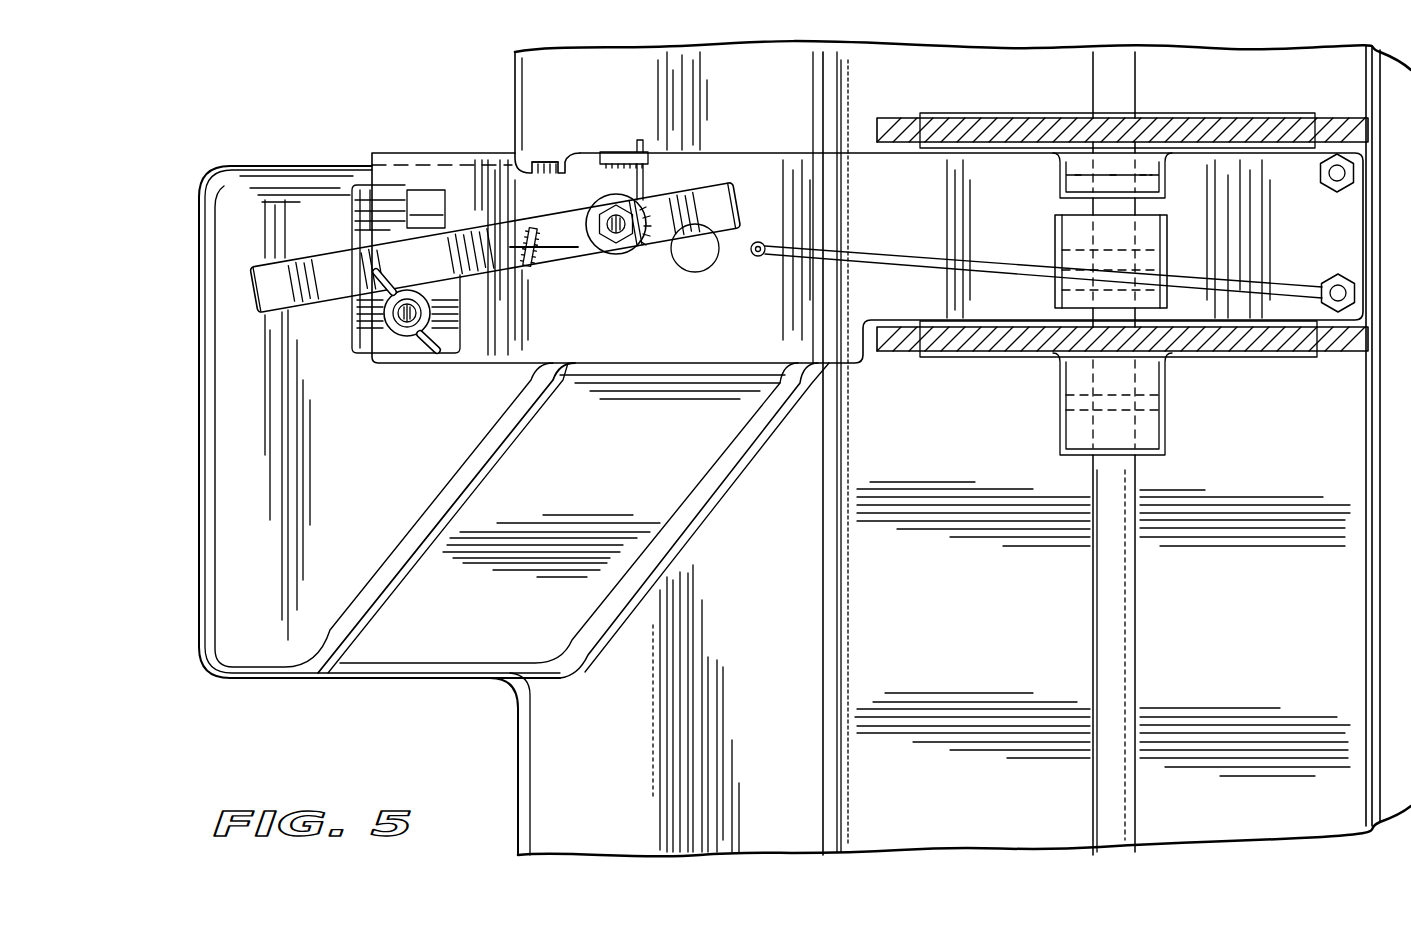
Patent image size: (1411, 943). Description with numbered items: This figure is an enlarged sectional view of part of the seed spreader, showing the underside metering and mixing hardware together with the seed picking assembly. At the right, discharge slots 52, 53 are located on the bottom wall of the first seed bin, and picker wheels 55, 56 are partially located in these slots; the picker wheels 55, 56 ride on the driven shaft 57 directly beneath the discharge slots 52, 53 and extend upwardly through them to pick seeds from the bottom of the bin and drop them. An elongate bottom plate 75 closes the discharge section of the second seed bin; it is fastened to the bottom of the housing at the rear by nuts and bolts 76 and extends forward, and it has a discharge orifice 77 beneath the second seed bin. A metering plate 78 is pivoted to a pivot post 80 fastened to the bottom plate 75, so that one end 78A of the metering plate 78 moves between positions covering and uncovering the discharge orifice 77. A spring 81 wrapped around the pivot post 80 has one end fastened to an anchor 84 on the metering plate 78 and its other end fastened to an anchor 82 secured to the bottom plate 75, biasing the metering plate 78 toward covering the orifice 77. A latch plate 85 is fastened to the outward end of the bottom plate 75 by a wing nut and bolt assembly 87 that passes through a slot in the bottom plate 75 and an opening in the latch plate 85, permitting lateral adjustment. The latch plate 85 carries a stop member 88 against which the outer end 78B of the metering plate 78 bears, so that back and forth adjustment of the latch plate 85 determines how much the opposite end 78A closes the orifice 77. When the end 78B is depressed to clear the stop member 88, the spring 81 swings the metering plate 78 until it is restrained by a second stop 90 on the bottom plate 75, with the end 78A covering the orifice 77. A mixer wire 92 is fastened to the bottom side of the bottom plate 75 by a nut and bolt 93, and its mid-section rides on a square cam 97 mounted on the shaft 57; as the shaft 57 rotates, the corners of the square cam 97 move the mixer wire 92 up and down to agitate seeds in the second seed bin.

The discharge slot 52 is at (1011, 360).
The discharge slot 53 is at (1257, 110).
The picker wheel 55 is at (1340, 348).
The picker wheel 56 is at (899, 126).
The driven shaft 57 is at (1125, 638).
The bottom plate 75 is at (643, 345).
The nuts and bolts 76 is at (1325, 183).
The discharge orifice 77 is at (720, 257).
The metering plate 78 is at (658, 232).
The metering plate end 78A is at (735, 200).
The metering plate end 78B is at (262, 288).
The pivot post 80 is at (619, 232).
The spring 81 is at (645, 183).
The anchor 82 is at (618, 153).
The anchor 84 is at (540, 268).
The latch plate 85 is at (366, 191).
The wing nut and bolt assembly 87 is at (424, 346).
The stop member 88 is at (413, 226).
The second stop 90 is at (570, 168).
The mixer wire 92 is at (913, 258).
The nut and bolt 93 is at (1339, 276).
The square cam 97 is at (1054, 241).